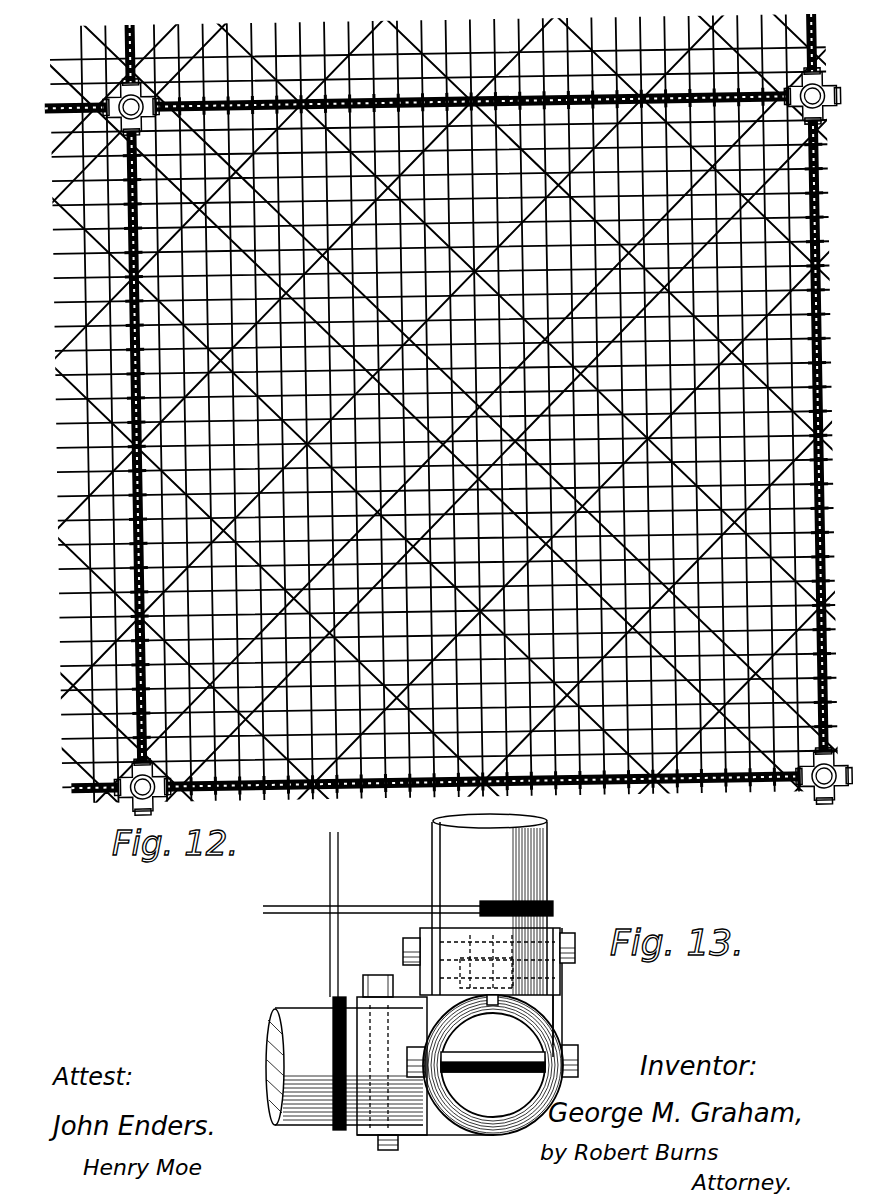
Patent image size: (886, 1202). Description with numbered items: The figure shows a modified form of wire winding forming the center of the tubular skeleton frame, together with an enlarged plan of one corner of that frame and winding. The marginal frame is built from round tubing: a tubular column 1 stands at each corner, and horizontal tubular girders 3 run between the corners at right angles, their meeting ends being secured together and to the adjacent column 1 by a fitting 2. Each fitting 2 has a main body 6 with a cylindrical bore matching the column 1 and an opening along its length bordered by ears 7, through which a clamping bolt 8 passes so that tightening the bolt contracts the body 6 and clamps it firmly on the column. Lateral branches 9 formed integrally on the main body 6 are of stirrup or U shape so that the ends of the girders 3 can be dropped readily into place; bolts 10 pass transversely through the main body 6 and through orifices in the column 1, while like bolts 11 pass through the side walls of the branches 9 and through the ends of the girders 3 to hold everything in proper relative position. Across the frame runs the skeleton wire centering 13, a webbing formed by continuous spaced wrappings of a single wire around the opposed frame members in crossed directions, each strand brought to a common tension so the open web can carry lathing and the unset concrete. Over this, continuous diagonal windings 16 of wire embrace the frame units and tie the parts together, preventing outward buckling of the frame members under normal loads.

In FIG. 12, the tubular column 1 is at (150, 88).
In FIG. 12, the fitting 2 is at (156, 130).
In FIG. 13, the fitting 2 is at (571, 1020).
In FIG. 12, the horizontal tubular girder 3 is at (138, 217).
In FIG. 13, the horizontal tubular girder 3 is at (406, 969).
In FIG. 13, the main body of the fitting 6 is at (495, 1128).
In FIG. 13, the ears 7 is at (477, 932).
In FIG. 13, the clamping bolt 8 is at (453, 978).
In FIG. 13, the lateral branch 9 is at (553, 982).
In FIG. 13, the bolt 10 is at (483, 1061).
In FIG. 13, the bolt 11 is at (576, 933).
In FIG. 12, the skeleton wire centering 13 is at (443, 409).
In FIG. 13, the skeleton wire centering 13 is at (408, 981).
In FIG. 12, the diagonal windings 16 is at (56, 370).